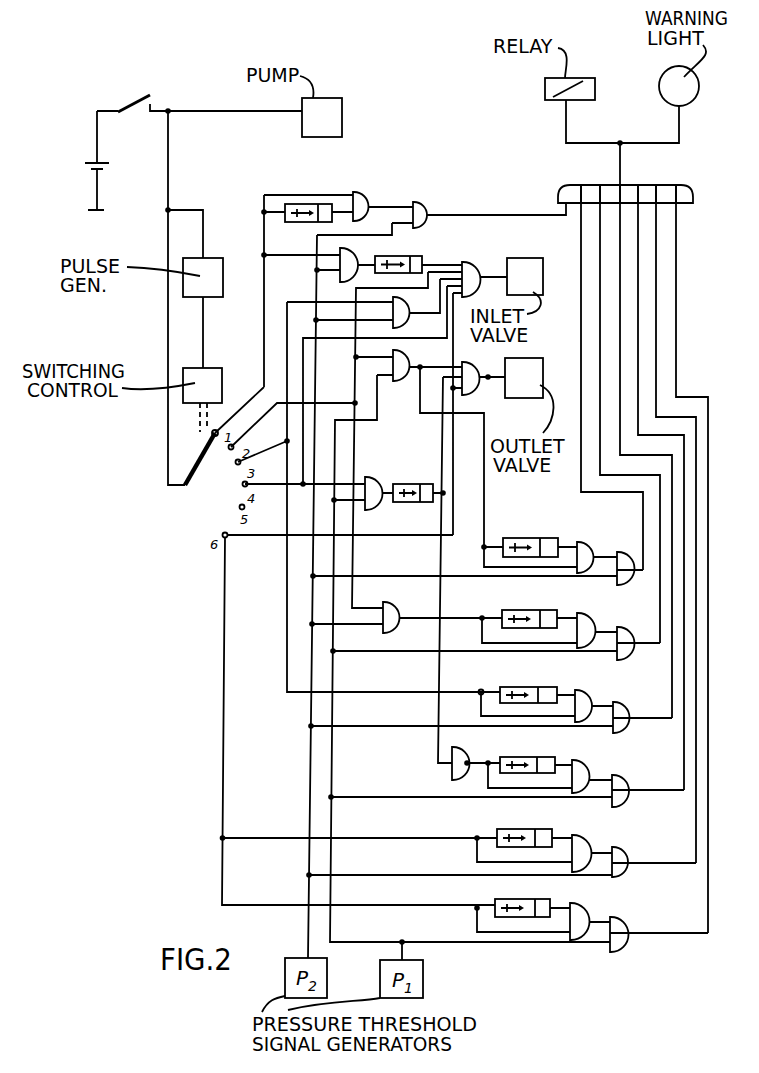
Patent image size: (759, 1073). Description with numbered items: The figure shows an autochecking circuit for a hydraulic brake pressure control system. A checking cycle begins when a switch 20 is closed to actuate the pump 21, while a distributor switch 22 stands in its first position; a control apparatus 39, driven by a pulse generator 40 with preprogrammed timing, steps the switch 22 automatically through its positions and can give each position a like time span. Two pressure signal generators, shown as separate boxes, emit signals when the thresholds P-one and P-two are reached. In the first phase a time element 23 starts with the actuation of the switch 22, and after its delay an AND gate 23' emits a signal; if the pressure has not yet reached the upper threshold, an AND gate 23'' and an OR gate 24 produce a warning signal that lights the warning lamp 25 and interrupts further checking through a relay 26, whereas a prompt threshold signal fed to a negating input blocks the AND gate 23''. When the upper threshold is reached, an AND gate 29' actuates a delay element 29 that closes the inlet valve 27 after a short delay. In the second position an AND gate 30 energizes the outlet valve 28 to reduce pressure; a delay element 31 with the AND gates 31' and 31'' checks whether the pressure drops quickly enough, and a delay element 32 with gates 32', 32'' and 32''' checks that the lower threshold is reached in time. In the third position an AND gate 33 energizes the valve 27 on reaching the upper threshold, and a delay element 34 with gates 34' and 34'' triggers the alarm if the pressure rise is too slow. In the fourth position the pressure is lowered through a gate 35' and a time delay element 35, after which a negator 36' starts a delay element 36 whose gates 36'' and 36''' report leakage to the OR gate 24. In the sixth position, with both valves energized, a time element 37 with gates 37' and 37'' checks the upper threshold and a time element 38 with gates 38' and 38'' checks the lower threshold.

The switch 20 is at (133, 103).
The pump 21 is at (344, 110).
The distributor switch 22 is at (198, 466).
The time element 23 is at (308, 194).
The AND gate 23' is at (373, 193).
The AND gate 23'' is at (435, 197).
The OR gate 24 is at (692, 178).
The warning lamp 25 is at (659, 86).
The relay 26 is at (545, 90).
The inlet valve 27 is at (528, 265).
The outlet valve 28 is at (527, 396).
The delay element 29 is at (417, 251).
The AND gate 29' is at (384, 258).
The AND gate 30 is at (405, 358).
The delay element 31 is at (530, 534).
The AND gate 31' is at (589, 542).
The AND gate 31'' is at (627, 546).
The delay element 32 is at (529, 608).
The AND gate 32' is at (411, 608).
The gate 32'' is at (597, 618).
The gate 32''' is at (637, 628).
The AND gate 33 is at (409, 318).
The delay element 34 is at (528, 687).
The gate 34' is at (598, 700).
The gate 34'' is at (640, 704).
The time delay element 35 is at (415, 478).
The gate 35' is at (383, 482).
The delay element 36 is at (527, 753).
The negator 36' is at (477, 756).
The gate 36'' is at (595, 763).
The gate 36''' is at (641, 770).
The time element 37 is at (524, 829).
The gate 37' is at (596, 844).
The gate 37'' is at (640, 846).
The time element 38 is at (522, 900).
The gate 38' is at (596, 914).
The gate 38'' is at (642, 920).
The control apparatus 39 is at (213, 373).
The pulse generator 40 is at (212, 270).